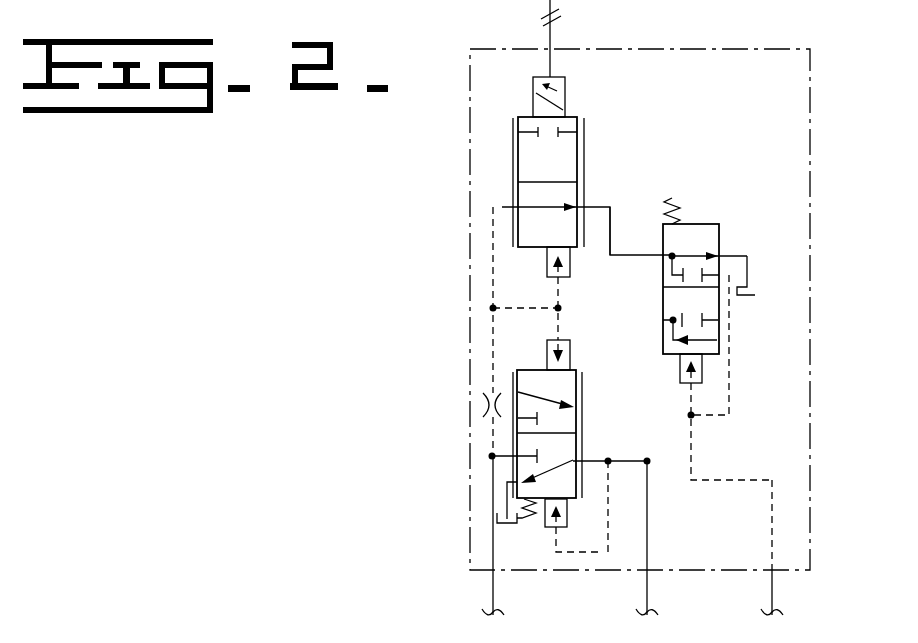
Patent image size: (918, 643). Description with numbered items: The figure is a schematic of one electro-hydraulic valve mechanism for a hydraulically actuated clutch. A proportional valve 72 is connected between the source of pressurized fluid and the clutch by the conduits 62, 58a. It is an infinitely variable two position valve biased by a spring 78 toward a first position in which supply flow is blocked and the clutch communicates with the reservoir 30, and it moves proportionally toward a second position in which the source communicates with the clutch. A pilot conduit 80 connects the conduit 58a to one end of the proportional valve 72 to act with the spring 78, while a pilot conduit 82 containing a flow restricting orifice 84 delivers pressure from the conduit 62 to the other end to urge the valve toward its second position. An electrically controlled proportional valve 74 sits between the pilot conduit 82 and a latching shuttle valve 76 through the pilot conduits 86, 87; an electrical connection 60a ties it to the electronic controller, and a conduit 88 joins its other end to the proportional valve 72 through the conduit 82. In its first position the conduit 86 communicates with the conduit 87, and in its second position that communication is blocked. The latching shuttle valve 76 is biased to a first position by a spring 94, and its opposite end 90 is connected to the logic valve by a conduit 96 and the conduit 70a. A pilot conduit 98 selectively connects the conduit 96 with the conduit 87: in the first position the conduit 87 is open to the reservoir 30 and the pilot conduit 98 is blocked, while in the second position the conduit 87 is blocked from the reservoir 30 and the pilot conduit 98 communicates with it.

The electrical connection 60a is at (550, 33).
The electrically controlled proportional valve 74 is at (530, 157).
The pilot conduit 87 is at (611, 226).
The conduit 88 is at (560, 280).
The pilot conduit 86 is at (492, 232).
The pilot conduit 82 is at (492, 357).
The flow restricting orifice 84 is at (480, 405).
The proportional valve 72 is at (540, 445).
The spring 78 is at (534, 522).
The pilot conduit 80 is at (585, 553).
The conduit 62 is at (490, 590).
The conduit 58a is at (650, 592).
The conduit 70a is at (775, 592).
The latching shuttle valve 76 is at (707, 302).
The spring 94 is at (671, 199).
The reservoir 30 is at (756, 295).
The pilot conduit 98 is at (729, 372).
The one end 90 is at (672, 356).
The conduit 96 is at (693, 445).